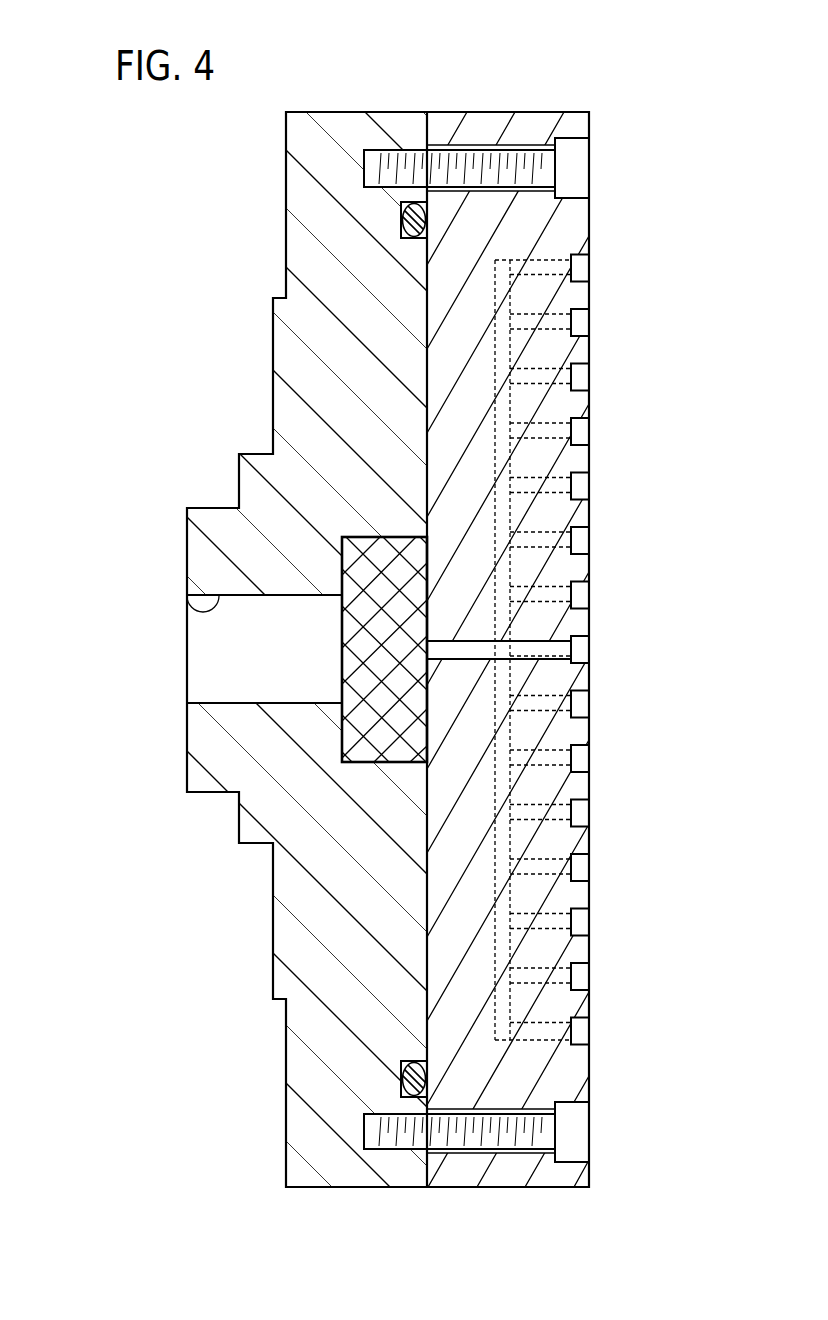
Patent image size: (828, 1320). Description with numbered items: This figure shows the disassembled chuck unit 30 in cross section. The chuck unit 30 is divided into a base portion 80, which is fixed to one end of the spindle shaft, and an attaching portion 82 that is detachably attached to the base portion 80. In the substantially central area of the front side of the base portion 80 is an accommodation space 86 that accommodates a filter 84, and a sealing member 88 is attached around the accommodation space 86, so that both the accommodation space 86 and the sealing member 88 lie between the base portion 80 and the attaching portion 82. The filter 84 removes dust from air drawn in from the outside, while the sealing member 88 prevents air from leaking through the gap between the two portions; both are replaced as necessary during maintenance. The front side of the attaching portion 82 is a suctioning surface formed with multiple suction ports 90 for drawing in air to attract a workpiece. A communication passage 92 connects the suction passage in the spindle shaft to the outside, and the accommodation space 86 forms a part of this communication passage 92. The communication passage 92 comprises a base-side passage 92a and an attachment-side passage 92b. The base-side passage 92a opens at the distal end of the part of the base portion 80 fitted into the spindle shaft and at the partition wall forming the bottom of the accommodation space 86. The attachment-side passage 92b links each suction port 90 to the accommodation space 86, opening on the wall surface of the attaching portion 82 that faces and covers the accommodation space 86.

The chuck unit 30 is at (668, 87).
The base portion 80 is at (357, 120).
The attaching portion 82 is at (496, 120).
The filter 84 is at (352, 651).
The accommodation space 86 is at (405, 542).
The sealing member 88 is at (404, 218).
The suction ports 90 is at (579, 323).
The communication passage 92 is at (150, 676).
The base-side passage 92a is at (187, 613).
The attachment-side passage 92b is at (550, 495).